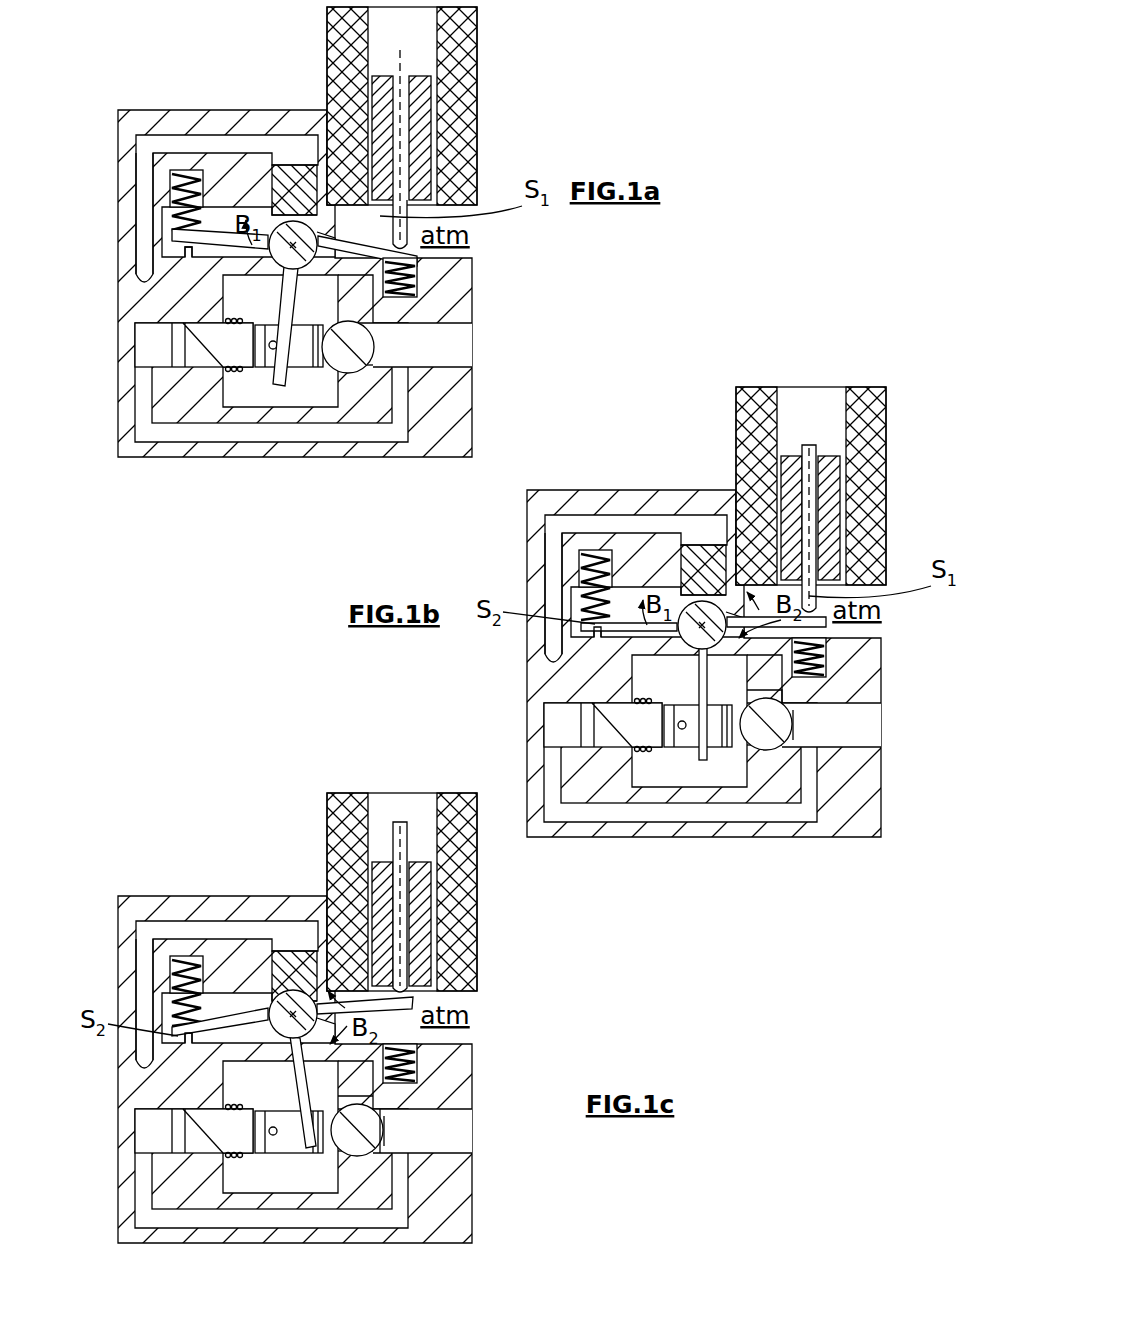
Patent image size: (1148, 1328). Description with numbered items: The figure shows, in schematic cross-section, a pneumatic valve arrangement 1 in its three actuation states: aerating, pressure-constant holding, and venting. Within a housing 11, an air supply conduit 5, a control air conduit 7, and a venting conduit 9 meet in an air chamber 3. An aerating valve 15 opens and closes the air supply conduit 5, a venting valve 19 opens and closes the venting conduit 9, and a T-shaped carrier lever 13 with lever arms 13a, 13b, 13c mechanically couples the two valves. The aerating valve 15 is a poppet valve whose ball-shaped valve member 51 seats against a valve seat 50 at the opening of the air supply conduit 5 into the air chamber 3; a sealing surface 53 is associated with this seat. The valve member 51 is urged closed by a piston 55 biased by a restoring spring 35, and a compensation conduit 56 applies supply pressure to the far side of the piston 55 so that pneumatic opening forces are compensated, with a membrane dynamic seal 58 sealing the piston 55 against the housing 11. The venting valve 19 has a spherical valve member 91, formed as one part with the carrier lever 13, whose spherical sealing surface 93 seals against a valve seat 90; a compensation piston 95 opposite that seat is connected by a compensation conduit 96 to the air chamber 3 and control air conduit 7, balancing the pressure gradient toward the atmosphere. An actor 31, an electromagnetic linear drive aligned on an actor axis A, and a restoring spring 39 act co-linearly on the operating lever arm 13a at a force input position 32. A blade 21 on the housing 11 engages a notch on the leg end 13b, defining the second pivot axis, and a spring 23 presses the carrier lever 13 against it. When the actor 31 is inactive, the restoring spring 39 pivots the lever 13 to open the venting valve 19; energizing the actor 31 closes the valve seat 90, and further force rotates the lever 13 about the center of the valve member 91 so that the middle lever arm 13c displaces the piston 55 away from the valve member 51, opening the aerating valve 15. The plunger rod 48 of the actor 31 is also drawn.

In FIG. 1A, the pneumatic valve arrangement 1 is at (317, 280).
In FIG. 1A, the air chamber 3 is at (290, 392).
In FIG. 1B, the air chamber 3 is at (689, 721).
In FIG. 1C, the air chamber 3 is at (280, 1127).
In FIG. 1A, the air supply conduit 5 is at (455, 345).
In FIG. 1B, the air supply conduit 5 is at (831, 725).
In FIG. 1C, the air supply conduit 5 is at (422, 1131).
In FIG. 1A, the control air conduit 7 is at (143, 297).
In FIG. 1B, the control air conduit 7 is at (566, 610).
In FIG. 1C, the control air conduit 7 is at (152, 1016).
In FIG. 1A, the venting conduit 9 is at (420, 294).
In FIG. 1A, the housing 11 is at (455, 398).
In FIG. 1B, the housing 11 is at (704, 645).
In FIG. 1C, the housing 11 is at (295, 1048).
In FIG. 1A, the carrier lever 13 is at (278, 297).
In FIG. 1B, the carrier lever 13 is at (710, 658).
In FIG. 1C, the carrier lever 13 is at (232, 1072).
In FIG. 1B, the operating lever arm 13a is at (842, 622).
In FIG. 1B, the counter-support lever arm 13b is at (624, 528).
In FIG. 1B, the middle lever arm 13c is at (689, 769).
In FIG. 1A, the aerating valve 15 is at (331, 372).
In FIG. 1B, the aerating valve 15 is at (762, 795).
In FIG. 1C, the aerating valve 15 is at (348, 1201).
In FIG. 1A, the venting valve 19 is at (320, 224).
In FIG. 1B, the venting valve 19 is at (705, 542).
In FIG. 1C, the venting valve 19 is at (270, 938).
In FIG. 1A, the blade 21 is at (176, 251).
In FIG. 1B, the blade 21 is at (527, 644).
In FIG. 1C, the blade 21 is at (118, 1050).
In FIG. 1A, the spring 23 is at (168, 212).
In FIG. 1B, the spring 23 is at (536, 567).
In FIG. 1C, the spring 23 is at (127, 978).
In FIG. 1A, the actor 31 is at (499, 100).
In FIG. 1B, the actor 31 is at (843, 499).
In FIG. 1C, the actor 31 is at (356, 882).
In FIG. 1A, the force input position 32 is at (404, 250).
In FIG. 1A, the restoring spring 35 is at (236, 372).
In FIG. 1A, the restoring spring 39 is at (416, 274).
In FIG. 1C, the plunger rod 48 is at (326, 898).
In FIG. 1B, the valve seat 50 is at (846, 702).
In FIG. 1C, the valve seat 50 is at (463, 1131).
In FIG. 1B, the valve member 51 is at (812, 791).
In FIG. 1C, the valve member 51 is at (403, 1195).
In FIG. 1C, the sealing surface 53 is at (429, 1085).
In FIG. 1A, the piston 55 is at (210, 352).
In FIG. 1B, the piston 55 is at (603, 790).
In FIG. 1C, the piston 55 is at (194, 1198).
In FIG. 1A, the compensation conduit 56 is at (255, 435).
In FIG. 1C, the compensation conduit 56 is at (271, 1204).
In FIG. 1C, the dynamic seal 58 is at (215, 1202).
In FIG. 1B, the valve seat 90 is at (857, 657).
In FIG. 1C, the valve seat 90 is at (448, 1051).
In FIG. 1A, the valve member 91 is at (278, 252).
In FIG. 1B, the valve member 91 is at (657, 540).
In FIG. 1A, the sealing surface 93 is at (320, 285).
In FIG. 1B, the sealing surface 93 is at (833, 679).
In FIG. 1A, the compensation piston 95 is at (295, 180).
In FIG. 1B, the compensation piston 95 is at (697, 508).
In FIG. 1C, the compensation piston 95 is at (294, 919).
In FIG. 1A, the compensation conduit 96 is at (180, 140).
In FIG. 1C, the compensation conduit 96 is at (198, 965).
In FIG. 1A, the actor axis A is at (400, 60).